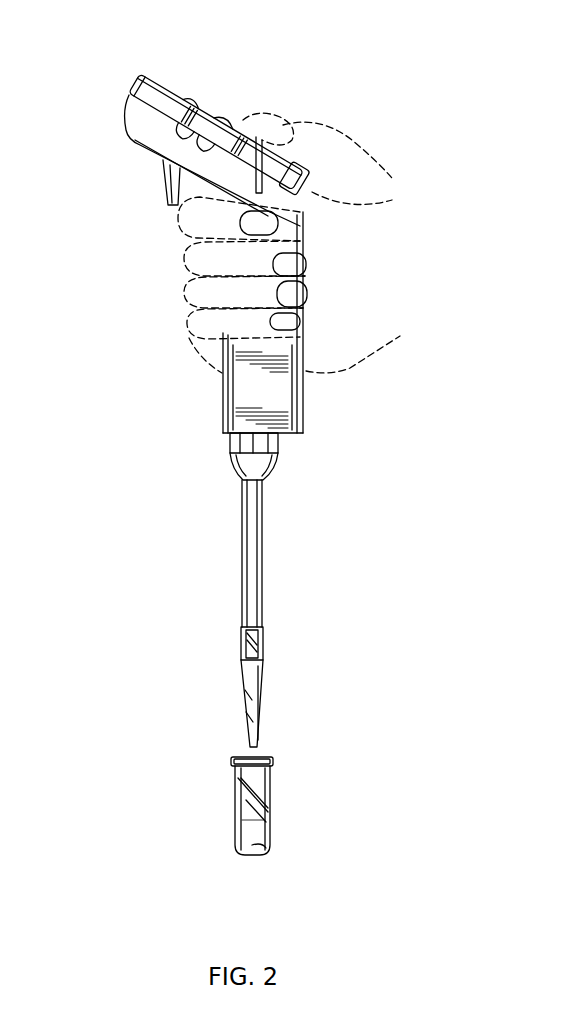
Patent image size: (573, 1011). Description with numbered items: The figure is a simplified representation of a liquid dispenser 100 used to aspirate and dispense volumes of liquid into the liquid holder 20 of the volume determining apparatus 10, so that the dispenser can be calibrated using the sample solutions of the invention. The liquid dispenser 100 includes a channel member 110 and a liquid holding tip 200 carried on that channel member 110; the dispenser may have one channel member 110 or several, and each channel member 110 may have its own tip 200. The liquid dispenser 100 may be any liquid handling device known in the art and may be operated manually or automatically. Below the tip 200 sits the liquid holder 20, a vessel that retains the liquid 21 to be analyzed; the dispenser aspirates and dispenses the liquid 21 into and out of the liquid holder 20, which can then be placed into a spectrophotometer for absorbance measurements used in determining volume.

The liquid dispenser 100 is at (363, 70).
The volume determining apparatus 10 is at (183, 410).
The channel member 110 is at (255, 566).
The liquid holding tip 200 is at (248, 682).
The liquid holder 20 is at (236, 818).
The liquid 21 is at (257, 833).